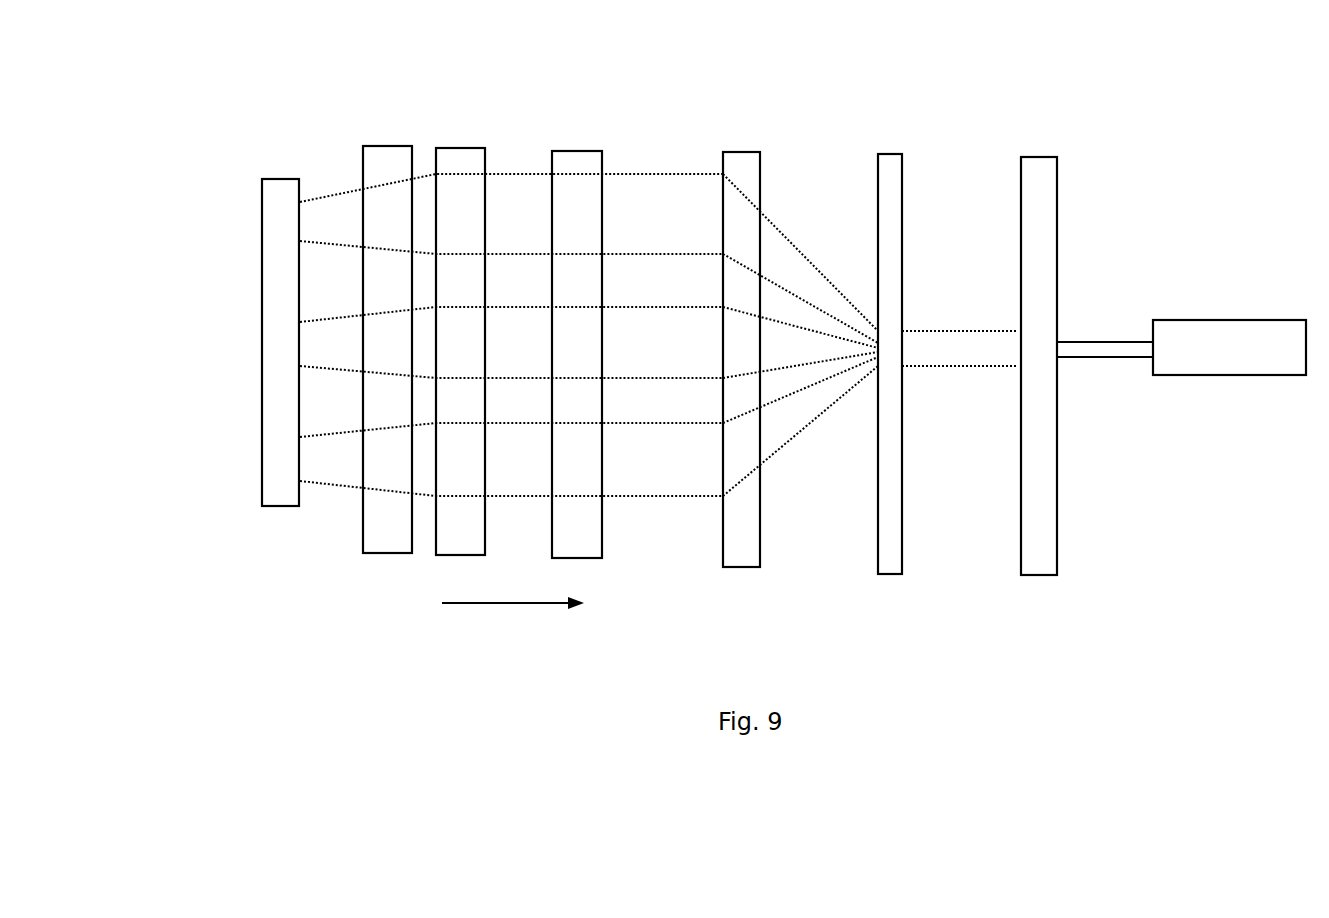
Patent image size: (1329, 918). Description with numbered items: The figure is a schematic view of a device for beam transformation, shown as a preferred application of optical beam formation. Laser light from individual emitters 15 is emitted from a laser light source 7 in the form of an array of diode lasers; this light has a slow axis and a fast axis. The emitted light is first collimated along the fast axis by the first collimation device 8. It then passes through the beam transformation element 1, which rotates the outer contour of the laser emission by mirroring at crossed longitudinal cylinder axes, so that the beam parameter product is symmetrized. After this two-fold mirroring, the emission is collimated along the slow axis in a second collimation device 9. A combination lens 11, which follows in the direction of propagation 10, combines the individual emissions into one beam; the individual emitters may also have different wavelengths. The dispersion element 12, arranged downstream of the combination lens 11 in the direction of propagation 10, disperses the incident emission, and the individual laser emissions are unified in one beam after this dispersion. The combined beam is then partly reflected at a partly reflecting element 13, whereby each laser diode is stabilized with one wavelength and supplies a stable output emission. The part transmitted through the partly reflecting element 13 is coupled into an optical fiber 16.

The laser light source 7 is at (276, 207).
The first collimation device 8 is at (383, 160).
The beam transformation element 1 is at (460, 160).
The second collimation device 9 is at (575, 160).
The combination lens 11 is at (736, 160).
The dispersion element 12 is at (886, 165).
The partly reflecting element 13 is at (1045, 170).
The optical fiber 16 is at (1204, 338).
The individual emitters 15 is at (275, 468).
The direction of propagation 10 is at (513, 625).